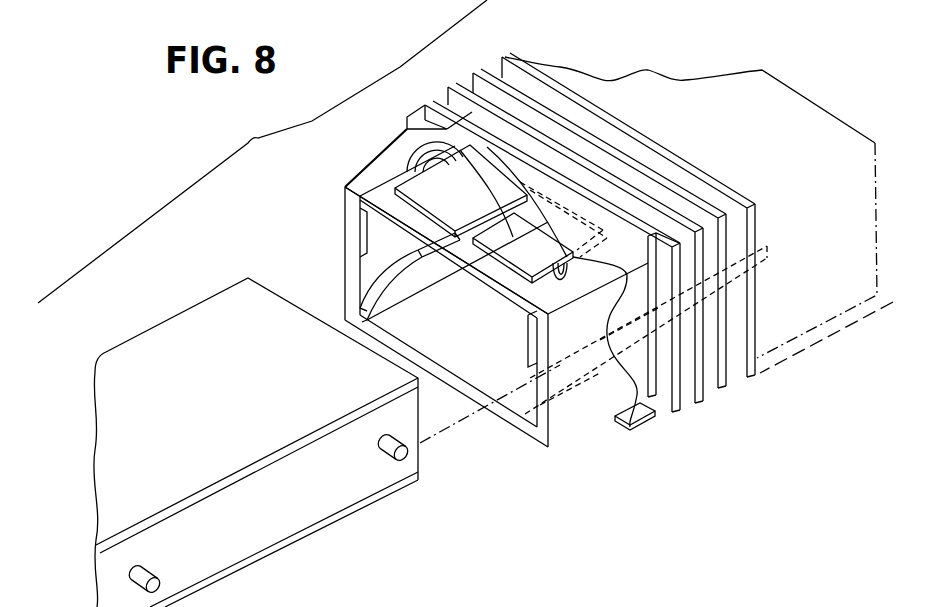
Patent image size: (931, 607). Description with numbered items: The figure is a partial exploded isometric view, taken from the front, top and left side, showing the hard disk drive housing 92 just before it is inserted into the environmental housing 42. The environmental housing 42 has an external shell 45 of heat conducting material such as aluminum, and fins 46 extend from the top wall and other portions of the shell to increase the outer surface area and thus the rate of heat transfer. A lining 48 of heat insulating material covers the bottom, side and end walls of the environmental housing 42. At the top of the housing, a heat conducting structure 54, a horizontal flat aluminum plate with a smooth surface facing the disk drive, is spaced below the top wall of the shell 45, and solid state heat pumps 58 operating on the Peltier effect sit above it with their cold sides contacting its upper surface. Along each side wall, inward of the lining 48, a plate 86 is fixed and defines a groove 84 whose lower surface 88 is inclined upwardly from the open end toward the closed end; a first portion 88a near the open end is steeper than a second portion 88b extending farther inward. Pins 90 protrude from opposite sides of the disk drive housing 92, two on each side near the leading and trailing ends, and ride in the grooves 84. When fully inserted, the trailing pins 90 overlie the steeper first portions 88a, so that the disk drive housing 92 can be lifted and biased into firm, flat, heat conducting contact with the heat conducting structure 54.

The environmental housing 42 is at (739, 68).
The external shell 45 is at (685, 100).
The fins 46 is at (657, 174).
The lining 48 is at (348, 208).
The heat conducting structure 54 is at (382, 193).
The solid state heat pump 58 is at (413, 131).
The groove 84 is at (377, 263).
The plate 86 is at (360, 228).
The lower surface 88 is at (399, 290).
The first portion of lower surface 88a is at (370, 287).
The second portion of lower surface 88b is at (420, 254).
The pins 90 is at (382, 446).
The disk drive housing 92 is at (160, 300).